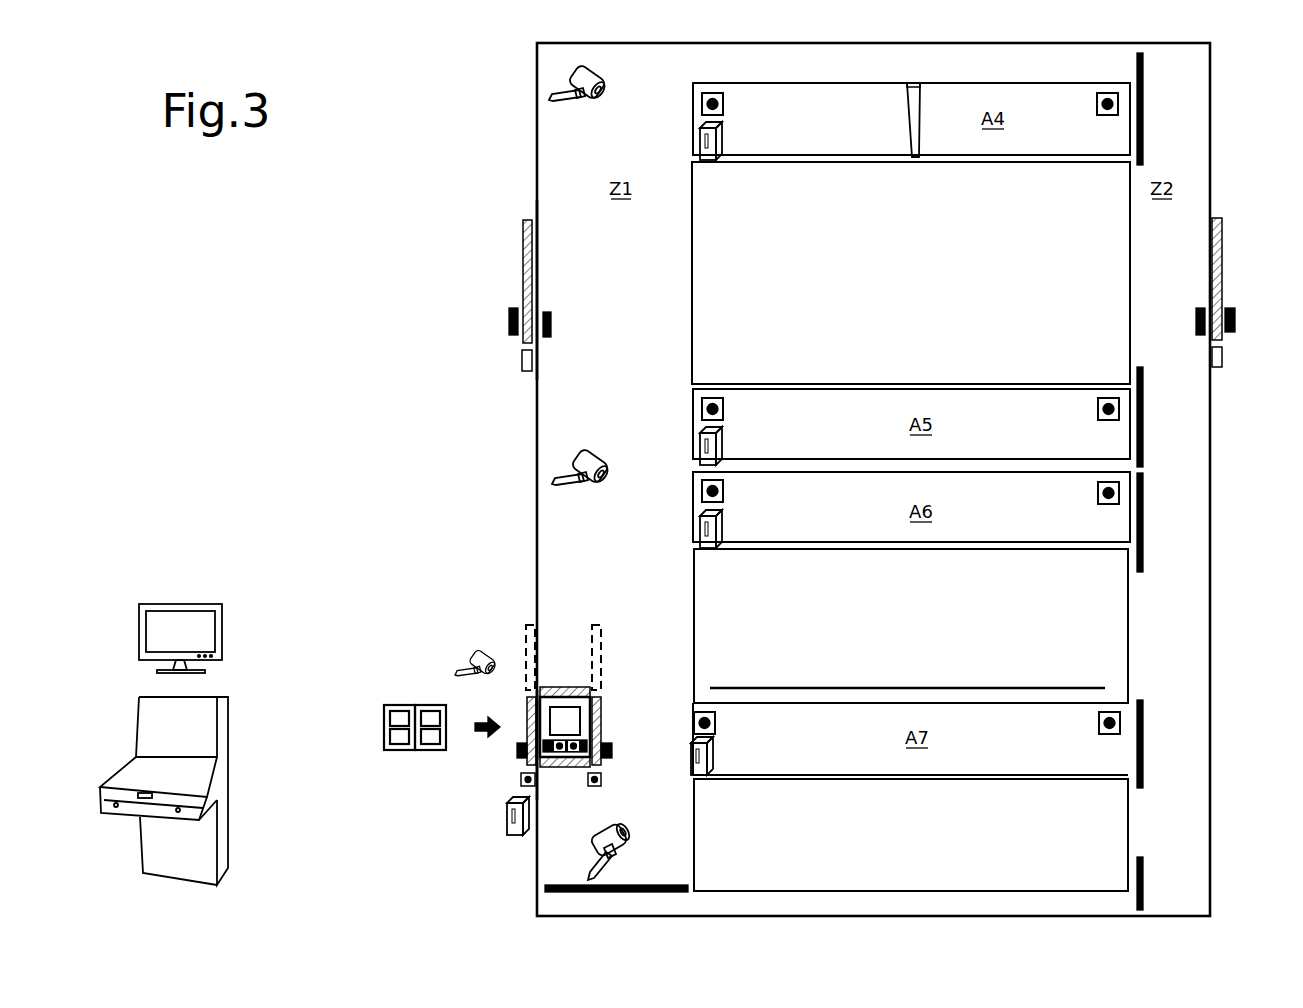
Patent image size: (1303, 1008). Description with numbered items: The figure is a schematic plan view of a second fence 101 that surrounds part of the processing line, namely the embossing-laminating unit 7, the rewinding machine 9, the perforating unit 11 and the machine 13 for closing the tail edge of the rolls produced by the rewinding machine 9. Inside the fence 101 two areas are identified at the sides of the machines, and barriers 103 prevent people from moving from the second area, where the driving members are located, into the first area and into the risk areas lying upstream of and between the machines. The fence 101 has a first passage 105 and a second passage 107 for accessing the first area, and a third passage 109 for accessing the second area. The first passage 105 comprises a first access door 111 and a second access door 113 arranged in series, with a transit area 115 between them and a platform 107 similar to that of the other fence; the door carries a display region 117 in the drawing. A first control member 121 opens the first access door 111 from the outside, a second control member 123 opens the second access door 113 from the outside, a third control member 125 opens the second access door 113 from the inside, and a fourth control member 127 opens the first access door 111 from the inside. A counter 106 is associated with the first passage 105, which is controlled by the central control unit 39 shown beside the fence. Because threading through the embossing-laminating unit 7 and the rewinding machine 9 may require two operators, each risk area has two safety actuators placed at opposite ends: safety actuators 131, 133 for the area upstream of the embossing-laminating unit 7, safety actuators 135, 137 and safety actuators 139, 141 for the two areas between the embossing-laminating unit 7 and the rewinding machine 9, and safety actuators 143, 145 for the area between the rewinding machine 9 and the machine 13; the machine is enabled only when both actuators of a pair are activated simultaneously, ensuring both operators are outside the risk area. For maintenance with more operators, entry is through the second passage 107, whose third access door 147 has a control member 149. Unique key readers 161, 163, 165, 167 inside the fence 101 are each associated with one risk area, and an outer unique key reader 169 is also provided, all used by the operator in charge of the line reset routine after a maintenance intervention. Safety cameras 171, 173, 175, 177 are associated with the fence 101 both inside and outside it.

The fence 101 is at (462, 116).
The barriers 103 is at (1143, 98).
The first passage 105 is at (558, 722).
The counter 106 is at (368, 745).
The second passage 107 is at (562, 291).
The third passage 109 is at (1222, 240).
The first access door 111 is at (527, 735).
The second access door 113 is at (596, 700).
The transit area 115 is at (530, 703).
The display screen 117 is at (566, 717).
The first control member 121 is at (521, 779).
The second control member 123 is at (572, 745).
The third control member 125 is at (601, 780).
The fourth control member 127 is at (556, 760).
The safety actuator 131 is at (713, 93).
The safety actuator 133 is at (1108, 93).
The safety actuator 135 is at (713, 398).
The safety actuator 137 is at (1110, 398).
The safety actuator 139 is at (701, 492).
The safety actuator 141 is at (1098, 492).
The safety actuator 143 is at (704, 712).
The safety actuator 145 is at (1100, 717).
The third access door 147 is at (527, 268).
The control member 149 is at (522, 366).
The unique key reader 161 is at (722, 132).
The unique key reader 163 is at (722, 438).
The unique key reader 165 is at (722, 527).
The unique key reader 167 is at (715, 756).
The outer unique key reader 169 is at (508, 822).
The safety camera 171 is at (480, 655).
The safety camera 173 is at (603, 96).
The safety camera 175 is at (590, 483).
The safety camera 177 is at (622, 857).
The embossing-laminating unit 7 is at (879, 277).
The rewinding machine 9 is at (936, 608).
The perforating unit 11 is at (911, 626).
The machine for closing the tail edge of the rolls 13 is at (905, 845).
The central control unit 39 is at (114, 703).